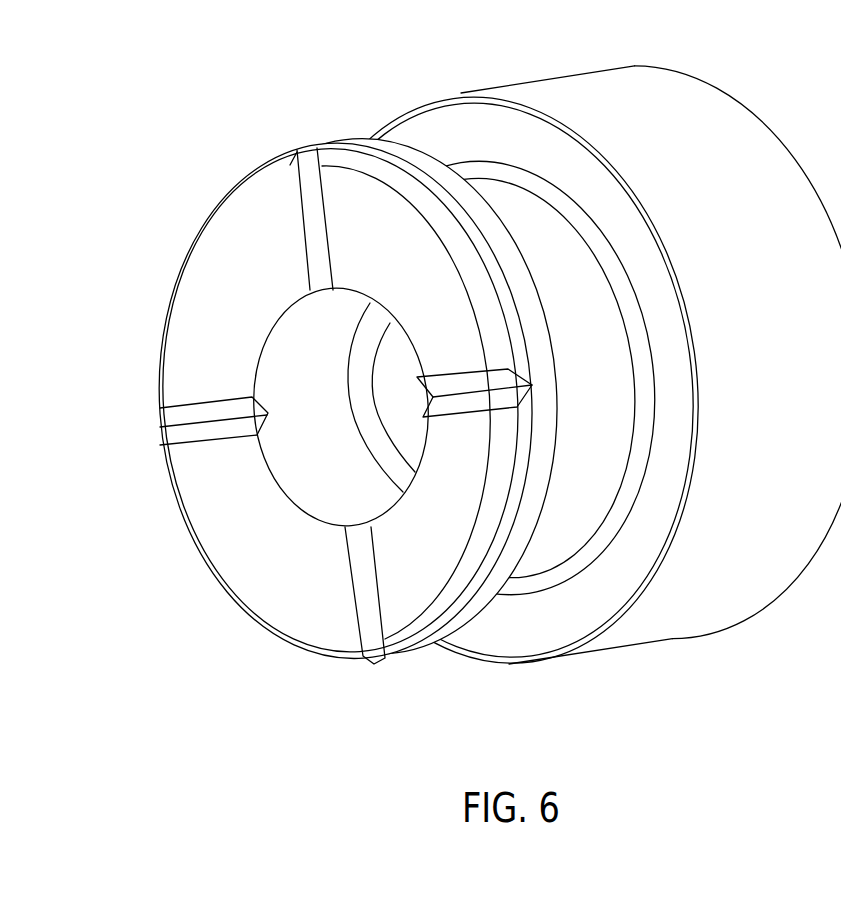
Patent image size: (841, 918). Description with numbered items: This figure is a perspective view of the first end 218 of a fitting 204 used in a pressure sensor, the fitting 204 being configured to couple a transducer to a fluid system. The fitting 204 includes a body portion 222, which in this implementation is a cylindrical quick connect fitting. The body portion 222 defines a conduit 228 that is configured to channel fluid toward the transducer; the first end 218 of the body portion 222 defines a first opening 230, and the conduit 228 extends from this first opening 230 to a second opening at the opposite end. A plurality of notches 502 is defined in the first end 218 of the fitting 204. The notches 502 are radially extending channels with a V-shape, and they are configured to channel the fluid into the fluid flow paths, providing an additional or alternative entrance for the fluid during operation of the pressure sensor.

The fitting 204 is at (547, 76).
The body portion 222 is at (420, 125).
The first end 218 is at (226, 255).
The conduit 228 is at (312, 368).
The first opening 230 is at (325, 468).
The notches 502 is at (303, 198).